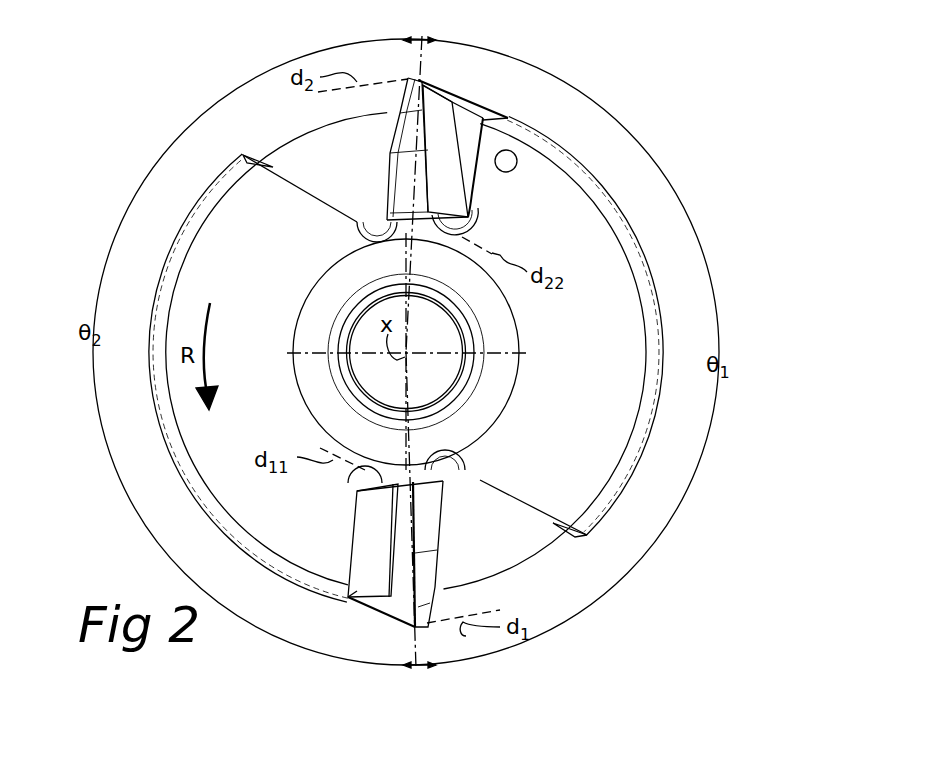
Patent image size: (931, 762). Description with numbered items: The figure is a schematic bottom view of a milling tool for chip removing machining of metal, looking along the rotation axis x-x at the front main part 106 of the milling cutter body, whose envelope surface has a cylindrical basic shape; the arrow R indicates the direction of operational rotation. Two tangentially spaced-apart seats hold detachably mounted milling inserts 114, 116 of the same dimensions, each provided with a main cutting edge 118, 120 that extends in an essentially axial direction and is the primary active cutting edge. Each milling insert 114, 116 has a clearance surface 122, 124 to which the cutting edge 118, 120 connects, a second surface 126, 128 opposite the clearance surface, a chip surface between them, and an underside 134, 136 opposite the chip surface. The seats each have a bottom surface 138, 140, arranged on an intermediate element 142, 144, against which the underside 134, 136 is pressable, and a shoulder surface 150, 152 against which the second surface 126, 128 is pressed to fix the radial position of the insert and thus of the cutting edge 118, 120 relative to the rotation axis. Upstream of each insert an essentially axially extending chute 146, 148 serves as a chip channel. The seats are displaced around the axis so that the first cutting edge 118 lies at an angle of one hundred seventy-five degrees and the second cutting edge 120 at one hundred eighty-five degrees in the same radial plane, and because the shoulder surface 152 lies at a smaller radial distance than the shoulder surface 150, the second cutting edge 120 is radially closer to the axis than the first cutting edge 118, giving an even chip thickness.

The front main part 106 is at (626, 310).
The first milling insert 114 is at (419, 549).
The second milling insert 116 is at (451, 121).
The first cutting edge 118 is at (412, 622).
The second cutting edge 120 is at (422, 80).
The clearance surface of first milling insert 122 is at (381, 602).
The clearance surface of second milling insert 124 is at (458, 88).
The second surface of first milling insert 126 is at (423, 480).
The second surface of second milling insert 128 is at (420, 232).
The underside of first milling insert 134 is at (390, 562).
The underside of second milling insert 136 is at (447, 142).
The bottom surface of first seat 138 is at (400, 535).
The bottom surface of second seat 140 is at (436, 177).
The intermediate element of first seat 142 is at (375, 582).
The intermediate element of second seat 144 is at (482, 128).
The first chute 146 is at (528, 538).
The second chute 148 is at (293, 158).
The shoulder surface of first seat 150 is at (400, 507).
The shoulder surface of second seat 152 is at (405, 215).